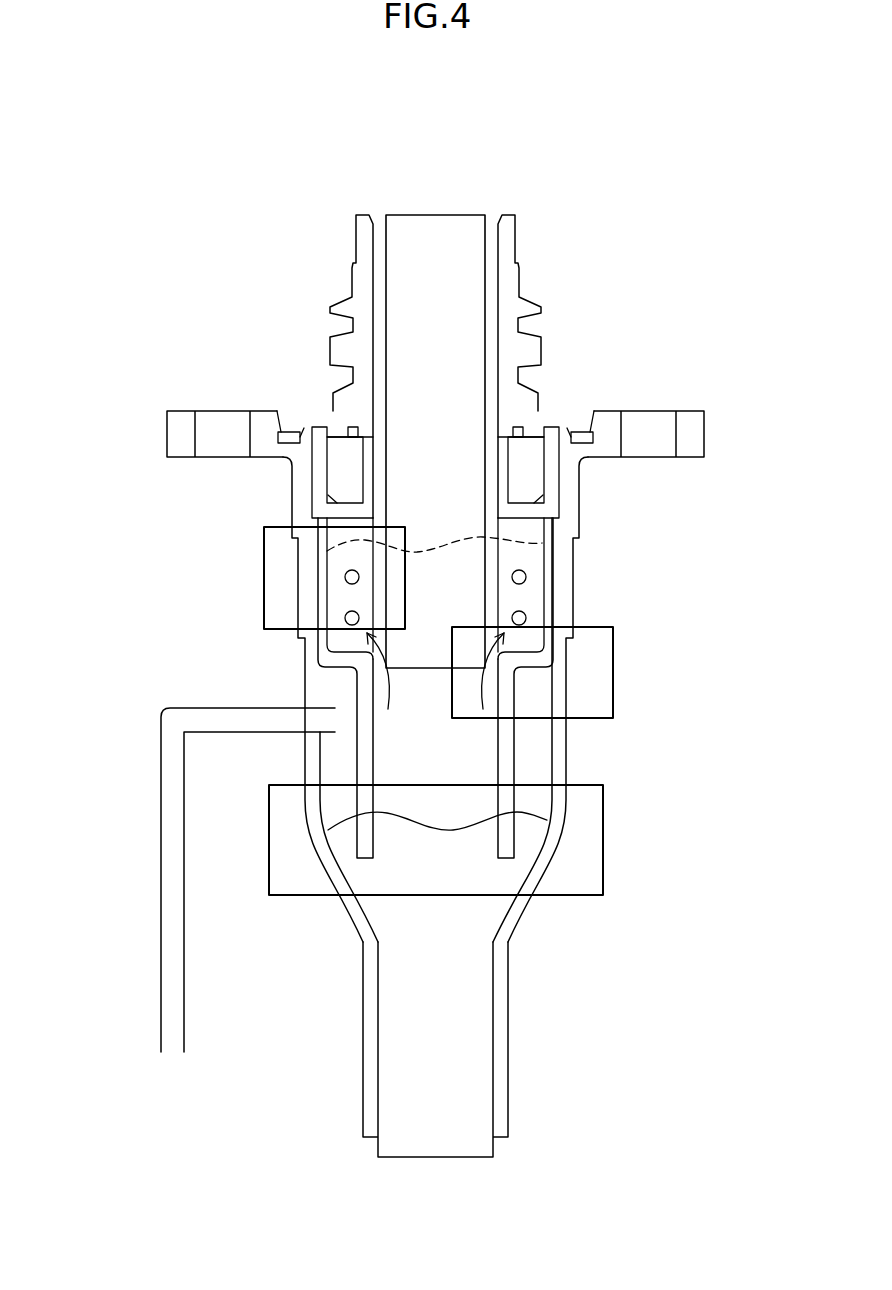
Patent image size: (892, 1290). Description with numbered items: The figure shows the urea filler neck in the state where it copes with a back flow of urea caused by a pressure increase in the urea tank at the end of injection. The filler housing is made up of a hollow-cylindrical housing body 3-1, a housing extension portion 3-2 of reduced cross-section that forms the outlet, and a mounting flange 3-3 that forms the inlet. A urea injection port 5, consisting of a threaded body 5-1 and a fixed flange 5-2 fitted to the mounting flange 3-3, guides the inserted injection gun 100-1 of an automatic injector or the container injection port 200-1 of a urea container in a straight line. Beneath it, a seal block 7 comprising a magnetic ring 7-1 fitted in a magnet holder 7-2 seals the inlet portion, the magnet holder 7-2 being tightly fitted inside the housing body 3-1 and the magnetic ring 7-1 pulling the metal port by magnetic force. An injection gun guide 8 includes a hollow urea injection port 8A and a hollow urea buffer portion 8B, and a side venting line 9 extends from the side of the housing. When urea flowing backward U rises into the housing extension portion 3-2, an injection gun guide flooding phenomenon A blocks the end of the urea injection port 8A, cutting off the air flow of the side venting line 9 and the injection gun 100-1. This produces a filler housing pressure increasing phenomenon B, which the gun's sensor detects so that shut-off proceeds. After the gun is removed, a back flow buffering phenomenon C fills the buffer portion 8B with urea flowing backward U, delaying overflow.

The injection gun 100-1 is at (420, 389).
The container injection port 200-1 is at (448, 243).
The urea injection port 5 is at (499, 366).
The threaded body 5-1 is at (533, 305).
The fixed flange 5-2 is at (569, 412).
The mounting flange 3-3 is at (705, 432).
The housing body 3-1 is at (557, 757).
The housing extension portion 3-2 is at (502, 1035).
The seal block 7 is at (548, 497).
The magnetic ring 7-1 is at (520, 473).
The magnet holder 7-2 is at (548, 462).
The injection gun guide 8 is at (315, 688).
The urea injection port 8A is at (363, 700).
The urea buffer portion 8B is at (322, 572).
The side venting line 9 is at (161, 877).
The injection gun guide flooding phenomenon A is at (603, 840).
The filler housing pressure increasing phenomenon B is at (613, 672).
The back flow buffering phenomenon C is at (263, 552).
The urea flowing backward U is at (450, 543).